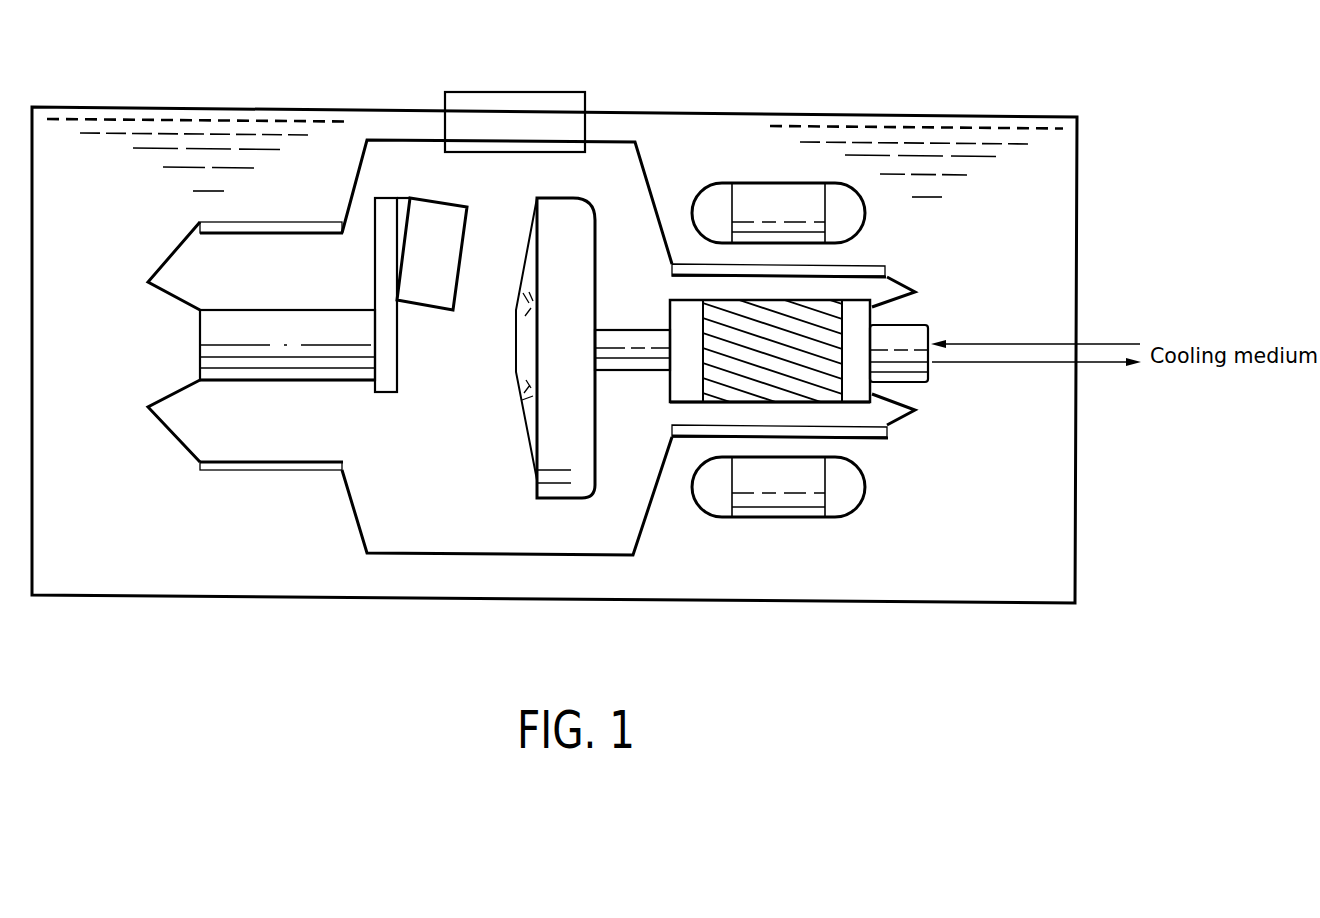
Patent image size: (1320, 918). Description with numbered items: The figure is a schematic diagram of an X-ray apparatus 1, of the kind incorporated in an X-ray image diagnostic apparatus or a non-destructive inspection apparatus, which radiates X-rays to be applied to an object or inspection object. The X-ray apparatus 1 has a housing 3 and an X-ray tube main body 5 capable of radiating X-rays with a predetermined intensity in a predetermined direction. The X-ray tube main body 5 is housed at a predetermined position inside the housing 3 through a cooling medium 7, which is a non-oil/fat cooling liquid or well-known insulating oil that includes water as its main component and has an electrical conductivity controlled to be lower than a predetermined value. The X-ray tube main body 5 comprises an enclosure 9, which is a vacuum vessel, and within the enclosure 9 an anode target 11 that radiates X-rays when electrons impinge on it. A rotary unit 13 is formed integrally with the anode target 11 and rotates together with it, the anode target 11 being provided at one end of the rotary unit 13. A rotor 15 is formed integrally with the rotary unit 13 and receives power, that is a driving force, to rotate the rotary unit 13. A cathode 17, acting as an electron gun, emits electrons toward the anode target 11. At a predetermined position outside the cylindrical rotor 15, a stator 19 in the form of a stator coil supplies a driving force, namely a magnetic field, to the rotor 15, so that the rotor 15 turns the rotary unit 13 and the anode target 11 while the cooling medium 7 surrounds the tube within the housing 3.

The X-ray apparatus 1 is at (959, 98).
The housing 3 is at (1077, 190).
The X-ray tube main body 5 is at (606, 165).
The cooling medium 7 is at (116, 213).
The enclosure 9 is at (270, 468).
The anode target 11 is at (563, 482).
The rotary unit 13 is at (641, 305).
The rotor 15 is at (808, 311).
The cathode 17 is at (428, 208).
The stator 19 is at (752, 182).